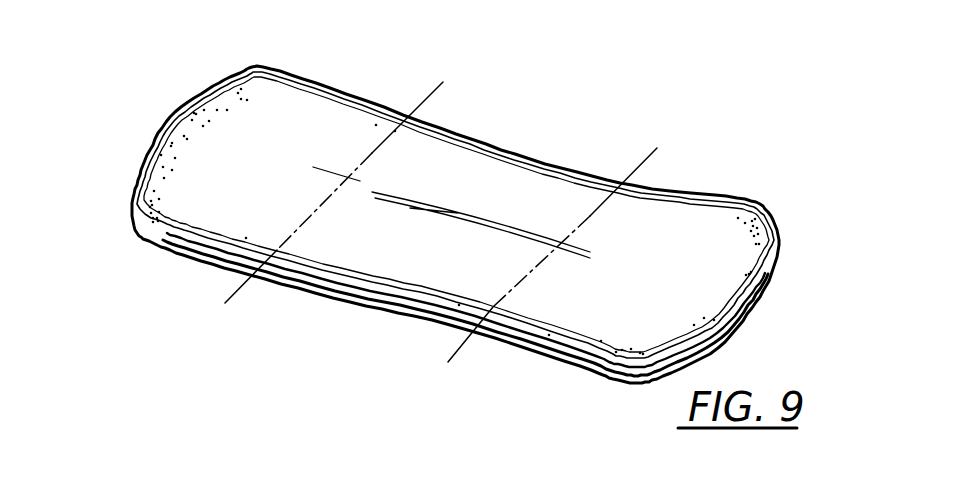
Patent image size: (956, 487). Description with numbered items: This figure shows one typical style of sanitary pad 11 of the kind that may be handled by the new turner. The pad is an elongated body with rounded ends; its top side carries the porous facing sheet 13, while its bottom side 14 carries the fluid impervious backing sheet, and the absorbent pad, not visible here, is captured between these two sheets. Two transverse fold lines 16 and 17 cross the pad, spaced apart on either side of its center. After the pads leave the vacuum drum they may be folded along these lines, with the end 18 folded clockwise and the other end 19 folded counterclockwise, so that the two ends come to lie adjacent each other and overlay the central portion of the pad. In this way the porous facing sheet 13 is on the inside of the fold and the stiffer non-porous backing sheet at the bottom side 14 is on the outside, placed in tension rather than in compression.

The sanitary napkin 11 is at (473, 196).
The porous facing sheet 13 is at (264, 99).
The bottom side 14 is at (208, 272).
The fold line 16 is at (434, 94).
The fold line 17 is at (653, 156).
The end of the pad 18 is at (192, 103).
The other end of the pad 19 is at (770, 267).